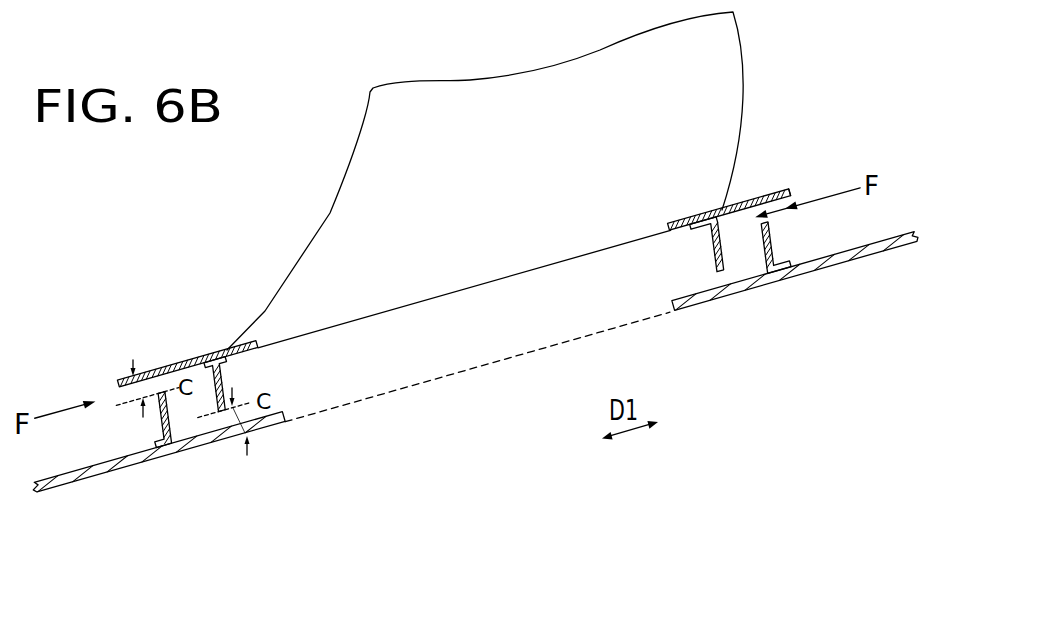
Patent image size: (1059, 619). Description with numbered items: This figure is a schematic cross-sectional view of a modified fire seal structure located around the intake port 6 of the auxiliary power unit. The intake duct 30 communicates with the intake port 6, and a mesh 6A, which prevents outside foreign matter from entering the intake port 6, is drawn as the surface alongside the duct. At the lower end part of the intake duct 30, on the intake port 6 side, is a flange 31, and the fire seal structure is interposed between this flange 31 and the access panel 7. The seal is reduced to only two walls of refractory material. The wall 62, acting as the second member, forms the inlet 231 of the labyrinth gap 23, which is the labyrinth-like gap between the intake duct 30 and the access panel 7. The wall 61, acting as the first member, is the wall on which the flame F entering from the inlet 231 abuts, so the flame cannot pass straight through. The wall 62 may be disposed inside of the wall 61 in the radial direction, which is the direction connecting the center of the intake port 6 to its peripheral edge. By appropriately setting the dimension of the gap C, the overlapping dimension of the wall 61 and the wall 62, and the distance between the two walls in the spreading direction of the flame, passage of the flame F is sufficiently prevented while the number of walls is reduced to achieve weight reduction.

The intake duct 30 is at (740, 43).
The flange 31 is at (757, 200).
The inlet 231 is at (791, 195).
The intake port 6 is at (315, 421).
The mesh 6A is at (472, 369).
The wall 61 is at (713, 252).
The wall 62 is at (777, 243).
The access panel 7 is at (847, 268).
The labyrinth gap 23 is at (744, 277).